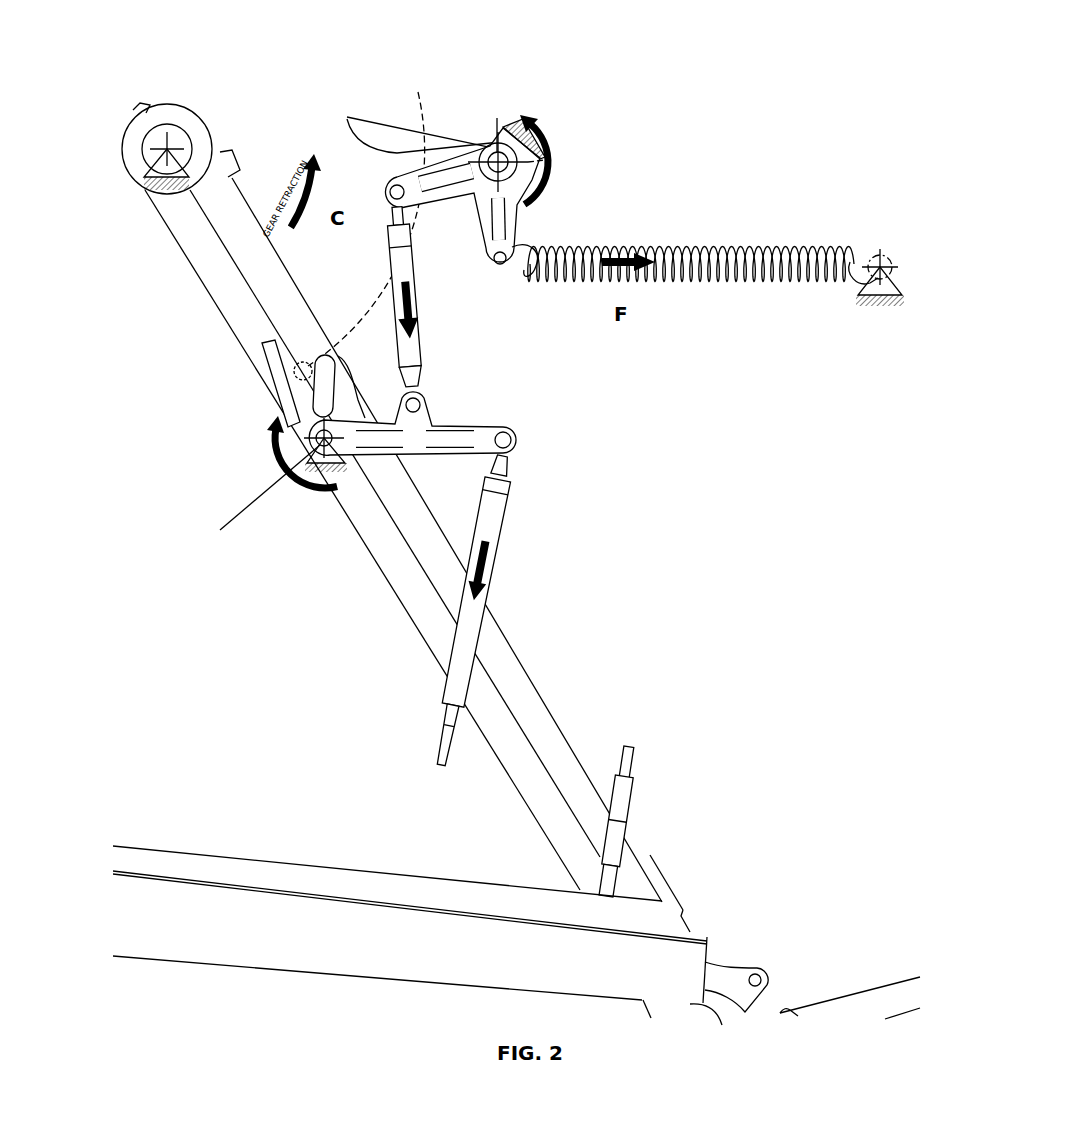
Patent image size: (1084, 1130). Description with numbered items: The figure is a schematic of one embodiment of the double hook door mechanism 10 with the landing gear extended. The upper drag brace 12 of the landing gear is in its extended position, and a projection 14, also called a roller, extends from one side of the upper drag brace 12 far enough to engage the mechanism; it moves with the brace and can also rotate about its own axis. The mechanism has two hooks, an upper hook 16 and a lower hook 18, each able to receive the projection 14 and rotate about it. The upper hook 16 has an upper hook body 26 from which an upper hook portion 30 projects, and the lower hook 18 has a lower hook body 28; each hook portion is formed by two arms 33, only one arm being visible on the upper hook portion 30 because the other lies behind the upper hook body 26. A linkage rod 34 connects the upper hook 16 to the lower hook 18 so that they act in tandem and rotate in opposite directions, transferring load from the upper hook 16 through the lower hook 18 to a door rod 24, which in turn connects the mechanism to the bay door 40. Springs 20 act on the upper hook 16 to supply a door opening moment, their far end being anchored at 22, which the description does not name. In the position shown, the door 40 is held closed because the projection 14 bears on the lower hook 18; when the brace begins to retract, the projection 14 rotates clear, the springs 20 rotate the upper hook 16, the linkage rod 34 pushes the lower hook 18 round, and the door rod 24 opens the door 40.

The double hook door mechanism 10 is at (512, 316).
The upper drag brace 12 is at (187, 262).
The projection 14 is at (306, 370).
The upper hook 16 is at (455, 118).
The lower hook 18 is at (318, 457).
The spring 20 is at (735, 246).
The spring anchor pivot 22 is at (880, 256).
The door rod 24 is at (488, 578).
The upper hook body 26 is at (514, 230).
The lower hook body 28 is at (440, 418).
The upper hook portion 30 is at (355, 114).
The arms 33 is at (423, 132).
The linkage rod 34 is at (424, 302).
The door 40 is at (275, 870).